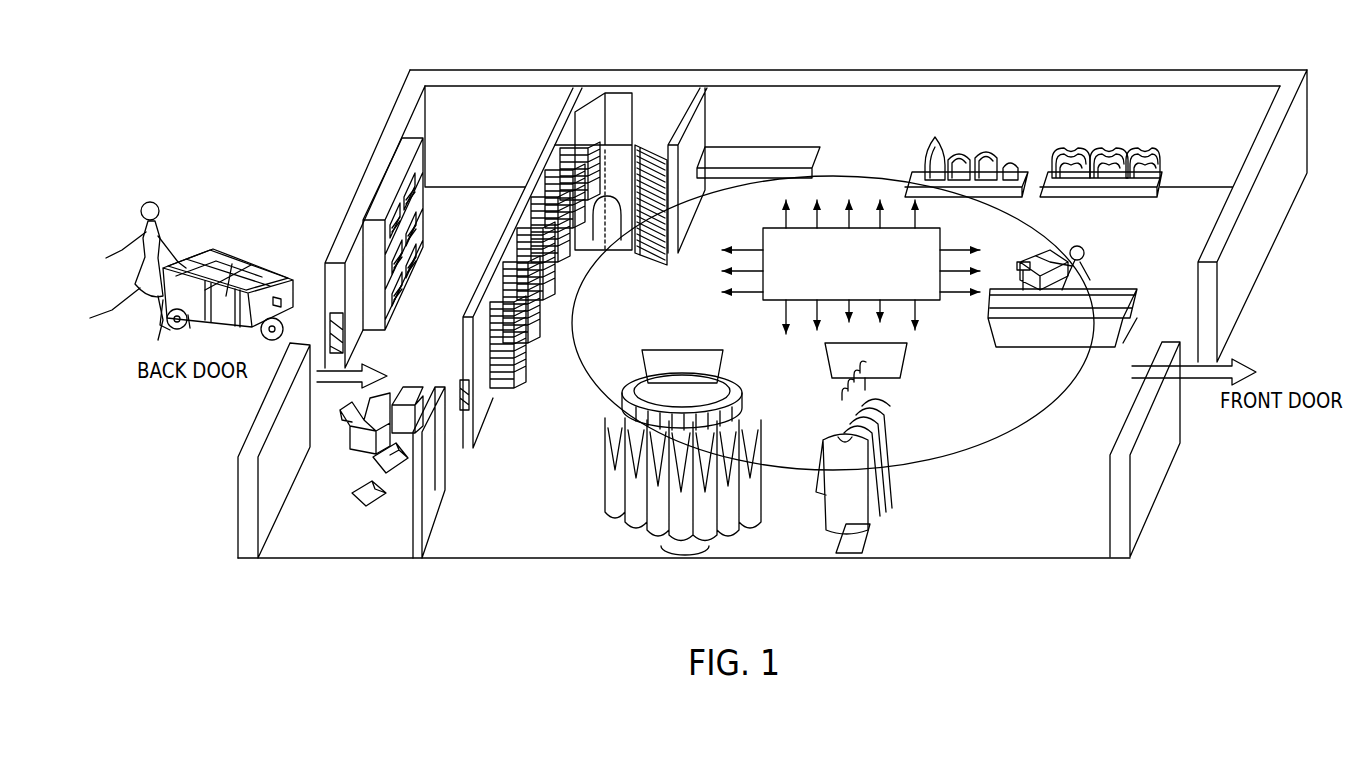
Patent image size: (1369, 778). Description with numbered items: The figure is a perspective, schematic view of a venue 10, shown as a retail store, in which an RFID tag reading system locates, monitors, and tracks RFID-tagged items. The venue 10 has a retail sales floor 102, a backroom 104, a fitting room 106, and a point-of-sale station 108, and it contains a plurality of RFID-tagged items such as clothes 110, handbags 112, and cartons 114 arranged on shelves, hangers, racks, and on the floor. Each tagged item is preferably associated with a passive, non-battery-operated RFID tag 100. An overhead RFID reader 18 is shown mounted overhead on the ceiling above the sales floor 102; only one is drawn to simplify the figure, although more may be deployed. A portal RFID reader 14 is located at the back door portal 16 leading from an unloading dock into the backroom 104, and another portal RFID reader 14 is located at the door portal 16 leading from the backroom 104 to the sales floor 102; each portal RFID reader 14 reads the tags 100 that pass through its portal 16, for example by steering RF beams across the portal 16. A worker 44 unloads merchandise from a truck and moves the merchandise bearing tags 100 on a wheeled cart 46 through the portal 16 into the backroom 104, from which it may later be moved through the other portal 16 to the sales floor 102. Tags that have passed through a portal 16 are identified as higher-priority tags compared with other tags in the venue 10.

The venue 10 is at (1148, 566).
The portal RFID reader 14 is at (621, 625).
The portal 16 is at (474, 409).
The overhead RFID reader 18 is at (770, 309).
The worker 44 is at (152, 202).
The wheeled cart 46 is at (279, 297).
The RFID tag 100 is at (236, 262).
The retail sales floor 102 is at (1012, 561).
The backroom 104 is at (336, 562).
The fitting room 106 is at (655, 106).
The point-of-sale station 108 is at (1105, 277).
The clothes 110 is at (610, 515).
The handbags 112 is at (1030, 132).
The cartons 114 is at (416, 386).